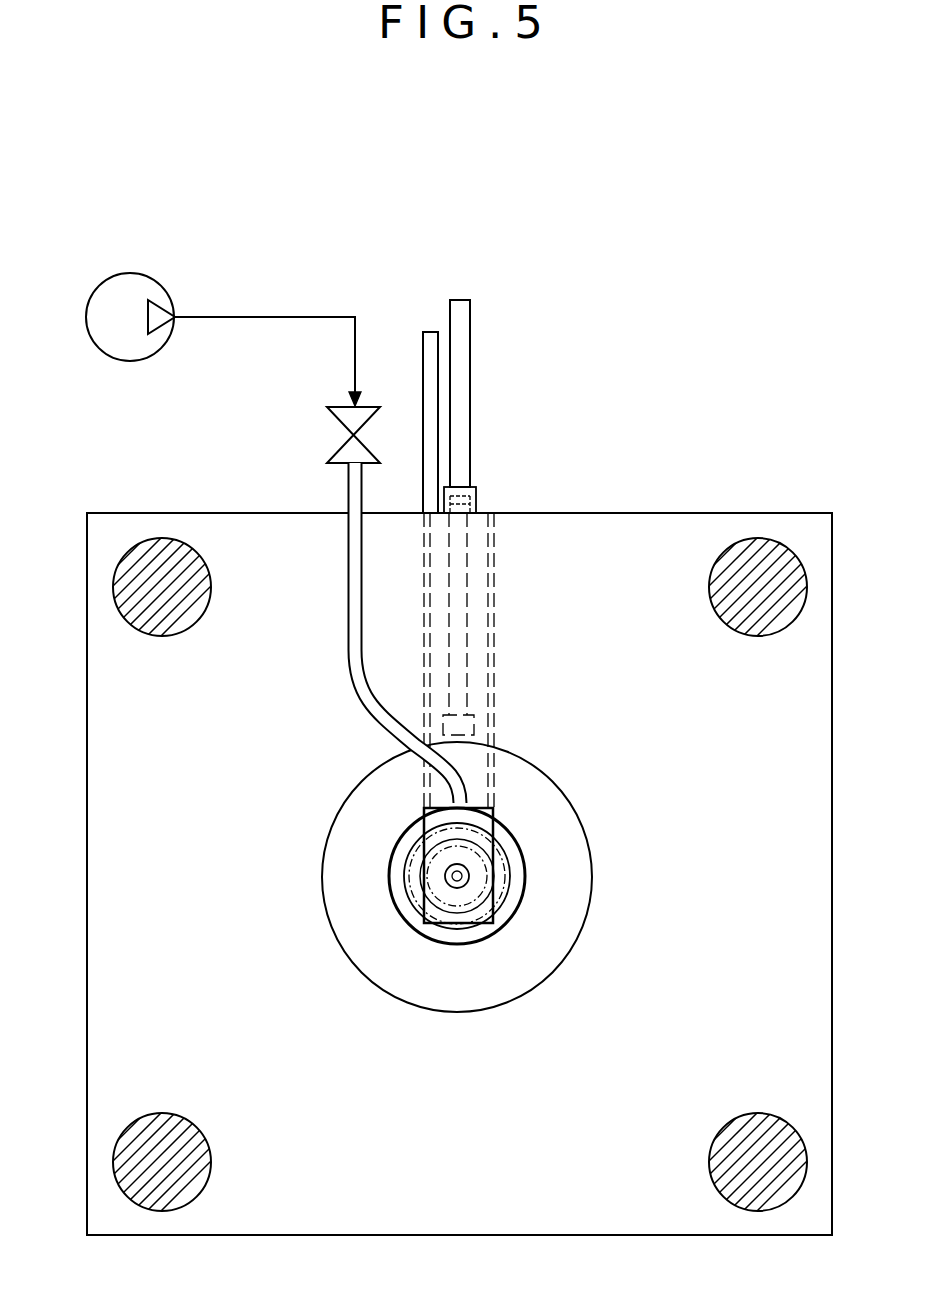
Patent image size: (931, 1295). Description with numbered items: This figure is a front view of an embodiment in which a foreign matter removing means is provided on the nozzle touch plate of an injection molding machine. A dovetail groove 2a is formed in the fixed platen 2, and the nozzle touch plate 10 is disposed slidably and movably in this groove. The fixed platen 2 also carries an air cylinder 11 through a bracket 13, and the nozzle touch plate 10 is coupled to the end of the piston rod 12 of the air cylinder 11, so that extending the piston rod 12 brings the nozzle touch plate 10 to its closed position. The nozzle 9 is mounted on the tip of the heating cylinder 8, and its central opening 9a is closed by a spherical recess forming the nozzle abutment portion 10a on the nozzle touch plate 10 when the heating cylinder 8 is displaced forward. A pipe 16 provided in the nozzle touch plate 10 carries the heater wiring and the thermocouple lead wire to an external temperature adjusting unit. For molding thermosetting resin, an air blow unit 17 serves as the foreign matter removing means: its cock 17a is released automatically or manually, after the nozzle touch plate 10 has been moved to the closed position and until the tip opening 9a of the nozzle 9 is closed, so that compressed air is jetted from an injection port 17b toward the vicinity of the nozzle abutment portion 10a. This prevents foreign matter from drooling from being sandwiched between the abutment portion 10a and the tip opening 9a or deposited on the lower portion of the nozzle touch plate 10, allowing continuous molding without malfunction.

The fixed platen 2 is at (680, 543).
The dovetail groove 2a is at (490, 680).
The heating cylinder 8 is at (502, 857).
The nozzle 9 is at (534, 972).
The central opening of the nozzle 9a is at (457, 883).
The nozzle touch plate 10 is at (427, 900).
The abutment portion 10a is at (460, 880).
The air cylinder 11 is at (460, 323).
The piston rod 12 is at (460, 607).
The bracket 13 is at (473, 492).
The pipe 16 is at (433, 352).
The air blow unit 17 is at (298, 314).
The cock 17a is at (352, 430).
The injection port 17b is at (413, 823).